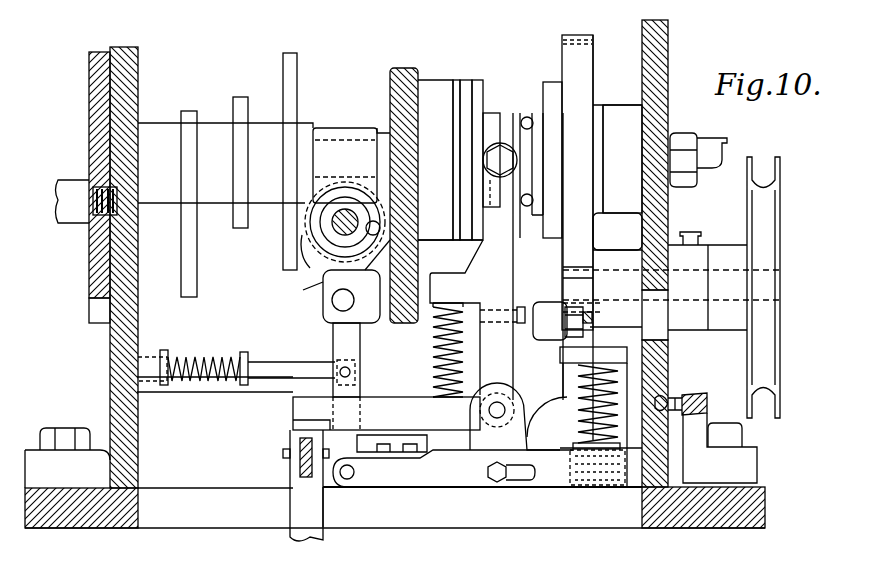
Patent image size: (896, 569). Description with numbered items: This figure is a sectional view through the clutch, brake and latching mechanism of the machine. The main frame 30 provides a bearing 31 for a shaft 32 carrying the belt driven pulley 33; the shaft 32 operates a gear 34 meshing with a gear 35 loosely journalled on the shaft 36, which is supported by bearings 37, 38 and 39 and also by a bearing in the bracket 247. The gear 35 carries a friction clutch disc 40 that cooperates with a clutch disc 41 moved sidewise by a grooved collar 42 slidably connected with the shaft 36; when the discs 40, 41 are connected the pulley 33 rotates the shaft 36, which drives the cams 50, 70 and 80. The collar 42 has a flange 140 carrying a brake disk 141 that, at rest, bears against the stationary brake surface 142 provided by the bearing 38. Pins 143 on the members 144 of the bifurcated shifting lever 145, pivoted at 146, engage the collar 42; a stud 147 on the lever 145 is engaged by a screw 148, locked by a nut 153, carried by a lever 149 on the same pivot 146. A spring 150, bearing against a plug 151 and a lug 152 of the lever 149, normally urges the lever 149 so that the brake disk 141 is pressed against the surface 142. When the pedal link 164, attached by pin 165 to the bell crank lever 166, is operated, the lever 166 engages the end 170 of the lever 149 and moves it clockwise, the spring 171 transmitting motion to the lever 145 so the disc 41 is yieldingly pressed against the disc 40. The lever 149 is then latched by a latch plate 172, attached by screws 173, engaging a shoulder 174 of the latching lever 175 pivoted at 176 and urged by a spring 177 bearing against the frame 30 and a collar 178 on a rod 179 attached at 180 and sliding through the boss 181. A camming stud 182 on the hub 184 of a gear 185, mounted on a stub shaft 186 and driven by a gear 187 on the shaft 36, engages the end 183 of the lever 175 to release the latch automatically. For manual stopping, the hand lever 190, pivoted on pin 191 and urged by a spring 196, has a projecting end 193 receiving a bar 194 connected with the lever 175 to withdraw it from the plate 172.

The main frame 30 is at (666, 206).
The bearing 31 is at (613, 258).
The shaft 32 is at (560, 272).
The belt driven pulley 33 is at (769, 193).
The gear 34 is at (573, 293).
The gear 35 is at (580, 52).
The shaft 36 is at (455, 157).
The bearing 37 is at (613, 118).
The bearing 38 is at (430, 88).
The bearing 39 is at (131, 68).
The friction clutch disc 40 is at (563, 42).
The clutch disc 41 is at (545, 76).
The grooved collar 42 is at (516, 205).
The cam 50 is at (240, 97).
The cam 70 is at (297, 72).
The cam 80 is at (189, 111).
The flange 140 is at (478, 82).
The brake disk 141 is at (466, 82).
The stationary brake surface 142 is at (456, 82).
The pins 143 is at (500, 143).
The members 144 is at (497, 195).
The bifurcated shifting lever 145 is at (475, 267).
The pivot pin 146 is at (488, 410).
The stud 147 is at (518, 310).
The screw 148 is at (528, 318).
The lever 149 is at (527, 437).
The spring 150 is at (580, 428).
The plug 151 is at (605, 470).
The lug 152 is at (566, 360).
The nut 153 is at (568, 327).
The link 164 is at (300, 503).
The pin 165 is at (283, 452).
The bell crank lever 166 is at (296, 462).
The end of lever 170 is at (293, 424).
The spring 171 is at (431, 362).
The latch plate 172 is at (387, 430).
The screws 173 is at (420, 446).
The shoulder 174 is at (360, 472).
The latching lever 175 is at (362, 343).
The pivot 176 is at (340, 305).
The spring 177 is at (182, 355).
The collar 178 is at (243, 352).
The rod 179 is at (264, 362).
The attachment point 180 is at (340, 375).
The boss 181 is at (150, 385).
The camming stud 182 is at (306, 297).
The end of lever 183 is at (381, 232).
The hub 184 is at (327, 160).
The gear 185 is at (302, 270).
The stub shaft 186 is at (360, 175).
The gear 187 is at (340, 135).
The hand lever 190 is at (698, 393).
The pin 191 is at (655, 402).
The downwardly projecting end 193 is at (700, 467).
The bar 194 is at (432, 480).
The spring 196 is at (666, 396).
The bracket 247 is at (100, 252).